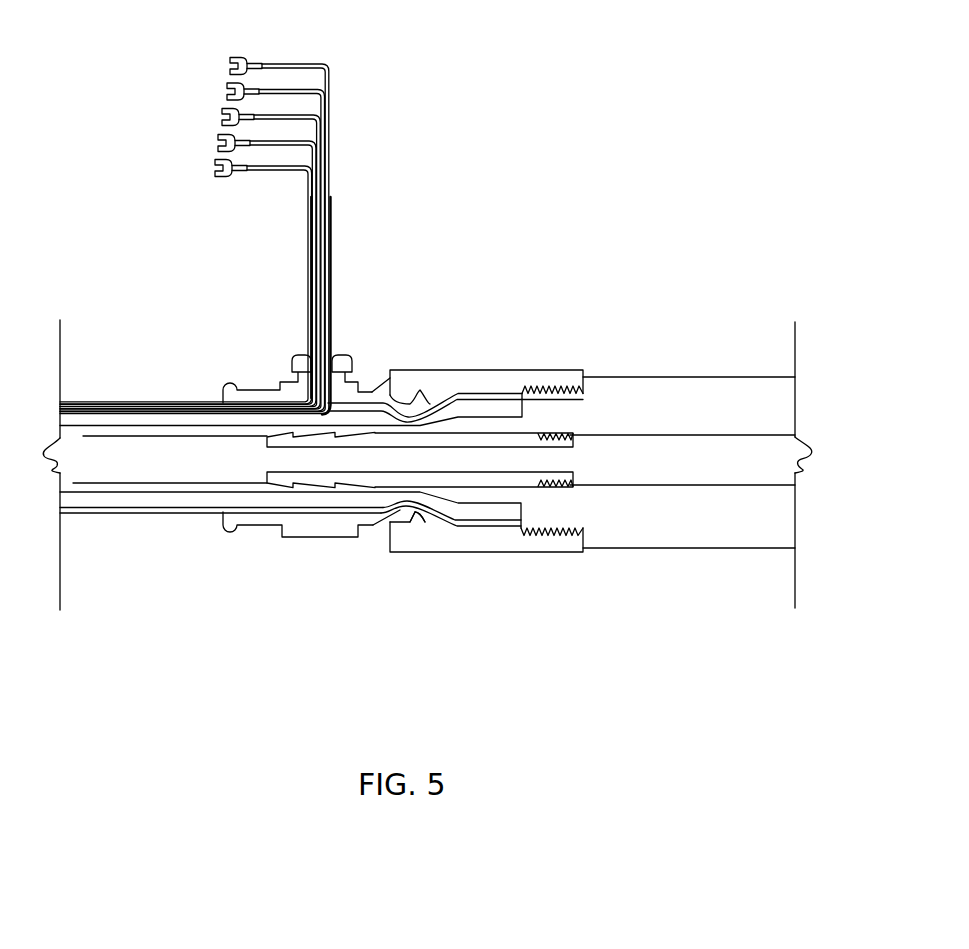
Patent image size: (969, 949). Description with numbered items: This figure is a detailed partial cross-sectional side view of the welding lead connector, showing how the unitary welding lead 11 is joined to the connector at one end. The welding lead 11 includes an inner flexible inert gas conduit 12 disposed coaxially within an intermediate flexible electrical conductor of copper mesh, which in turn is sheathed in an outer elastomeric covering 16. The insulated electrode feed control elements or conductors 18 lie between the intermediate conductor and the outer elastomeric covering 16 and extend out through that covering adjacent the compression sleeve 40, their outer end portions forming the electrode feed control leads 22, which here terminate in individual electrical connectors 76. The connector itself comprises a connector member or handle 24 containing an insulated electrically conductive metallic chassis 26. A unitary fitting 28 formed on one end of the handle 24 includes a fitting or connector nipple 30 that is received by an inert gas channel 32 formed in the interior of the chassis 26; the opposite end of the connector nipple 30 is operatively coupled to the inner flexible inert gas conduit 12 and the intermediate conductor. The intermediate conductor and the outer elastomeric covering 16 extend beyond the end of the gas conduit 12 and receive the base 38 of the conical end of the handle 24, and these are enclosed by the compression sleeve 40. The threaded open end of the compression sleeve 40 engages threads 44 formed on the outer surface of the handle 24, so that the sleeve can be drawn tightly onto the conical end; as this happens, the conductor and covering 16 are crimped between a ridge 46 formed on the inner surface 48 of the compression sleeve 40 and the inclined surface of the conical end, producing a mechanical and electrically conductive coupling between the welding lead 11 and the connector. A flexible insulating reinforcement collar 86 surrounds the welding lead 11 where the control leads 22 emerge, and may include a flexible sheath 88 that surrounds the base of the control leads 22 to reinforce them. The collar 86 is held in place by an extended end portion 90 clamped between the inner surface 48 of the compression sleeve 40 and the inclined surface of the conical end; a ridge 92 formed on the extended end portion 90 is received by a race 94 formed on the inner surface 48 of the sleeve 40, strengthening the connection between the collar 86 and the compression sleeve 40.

The unitary welding lead 11 is at (187, 513).
The inner flexible inert gas conduit 12 is at (88, 437).
The outer elastomeric covering 16 is at (493, 398).
The insulated electrode feed control elements or conductors 18 is at (127, 406).
The electrode feed control leads 22 is at (333, 211).
The connector member or handle 24 is at (667, 377).
The insulated electrically conductive metallic chassis 26 is at (755, 390).
The unitary fitting 28 is at (494, 598).
The fitting or connector nipple 30 is at (267, 473).
The inert gas channel 32 is at (682, 516).
The base of the conical end 38 is at (543, 510).
The compression sleeve 40 is at (576, 552).
The threads 44 is at (563, 393).
The ridge 46 is at (427, 383).
The inner surface of the compression sleeve 48 is at (468, 400).
The individual electrical connectors 76 is at (227, 64).
The flexible insulating reinforcement collar 86 is at (296, 358).
The flexible sheath 88 is at (267, 343).
The extended end portion 90 is at (373, 525).
The ridge 92 is at (420, 518).
The race 94 is at (425, 520).